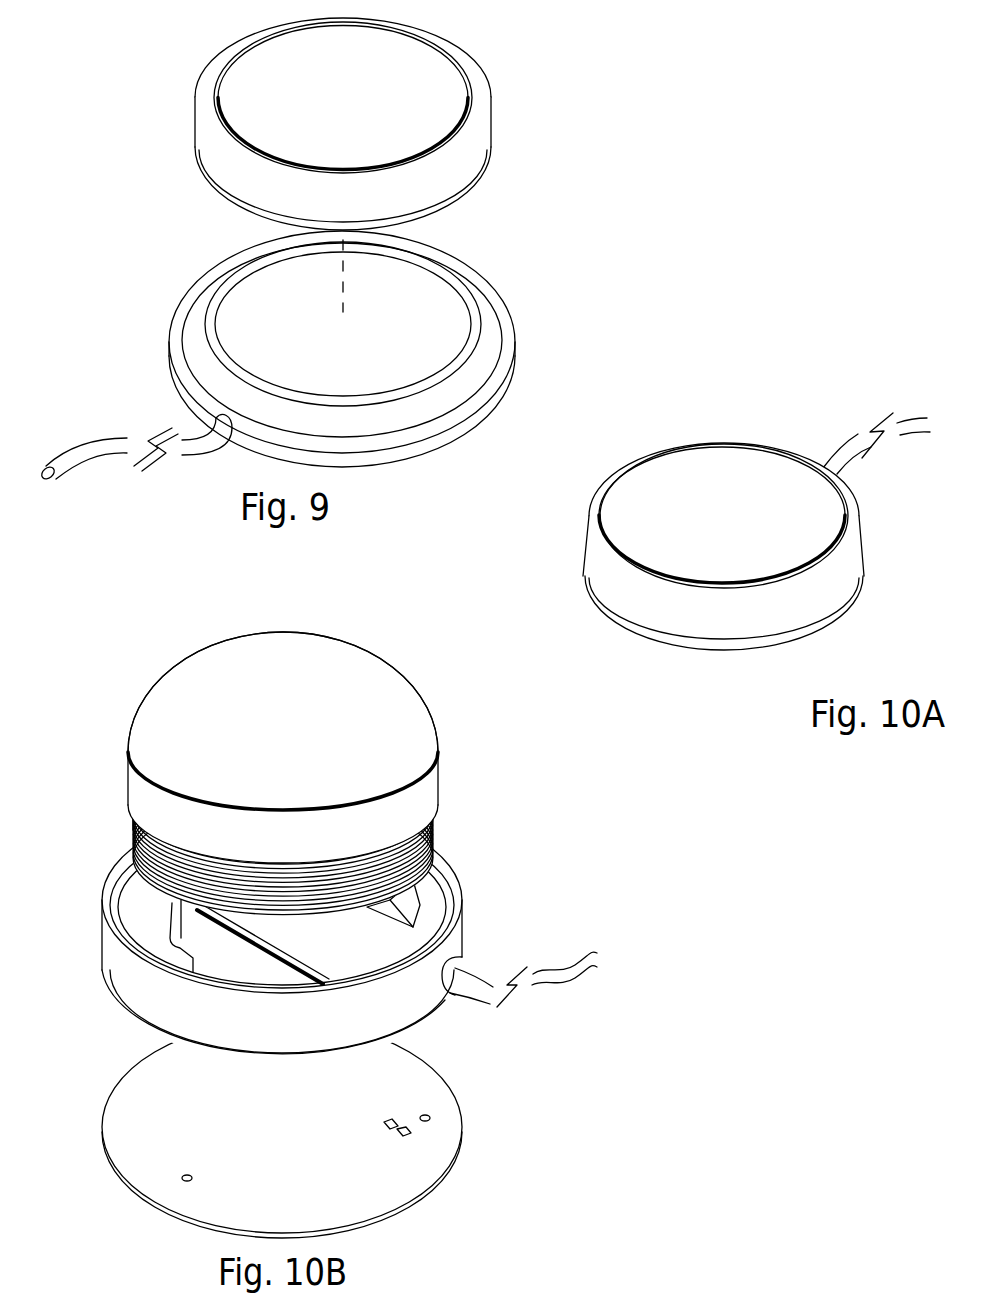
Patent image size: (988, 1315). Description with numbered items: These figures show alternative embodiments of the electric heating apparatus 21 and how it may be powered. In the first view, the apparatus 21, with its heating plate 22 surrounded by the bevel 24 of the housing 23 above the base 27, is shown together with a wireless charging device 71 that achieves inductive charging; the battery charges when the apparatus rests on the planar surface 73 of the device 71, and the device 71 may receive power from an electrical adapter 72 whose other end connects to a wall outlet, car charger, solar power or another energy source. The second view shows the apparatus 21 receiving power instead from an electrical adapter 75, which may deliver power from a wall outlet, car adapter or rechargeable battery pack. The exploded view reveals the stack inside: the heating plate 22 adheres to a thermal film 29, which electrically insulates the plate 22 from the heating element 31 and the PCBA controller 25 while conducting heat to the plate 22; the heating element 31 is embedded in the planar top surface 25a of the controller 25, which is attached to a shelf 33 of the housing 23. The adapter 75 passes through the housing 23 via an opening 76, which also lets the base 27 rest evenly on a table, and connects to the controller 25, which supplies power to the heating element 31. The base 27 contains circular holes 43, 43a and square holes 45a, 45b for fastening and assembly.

In FIG. 9, the electric heating apparatus 21 is at (340, 130).
In FIG. 10A, the electric heating apparatus 21 is at (718, 558).
In FIG. 9, the heating plate 22 is at (273, 102).
In FIG. 10A, the heating plate 22 is at (727, 472).
In FIG. 10B, the heating plate 22 is at (397, 680).
In FIG. 9, the housing 23 is at (452, 167).
In FIG. 10A, the housing 23 is at (798, 595).
In FIG. 10B, the housing 23 is at (328, 933).
In FIG. 9, the bevel 24 is at (473, 110).
In FIG. 10A, the bevel 24 is at (837, 545).
In FIG. 10B, the bevel 24 is at (127, 878).
In FIG. 10B, the PCBA controller 25 is at (291, 832).
In FIG. 10B, the top surface of PCBA controller 25a is at (137, 828).
In FIG. 9, the base 27 is at (237, 203).
In FIG. 10A, the base 27 is at (727, 643).
In FIG. 10B, the base 27 is at (135, 1125).
In FIG. 10B, the thermal film 29 is at (413, 788).
In FIG. 10B, the heating element 31 is at (427, 847).
In FIG. 10B, the shelf 33 is at (358, 940).
In FIG. 10B, the circular hole 43 is at (183, 1180).
In FIG. 10B, the circular hole 43a is at (430, 1118).
In FIG. 10B, the square hole 45a is at (393, 1122).
In FIG. 10B, the square hole 45b is at (408, 1132).
In FIG. 9, the wireless charging device 71 is at (182, 342).
In FIG. 9, the electrical adapter 72 is at (120, 442).
In FIG. 9, the planar surface 73 is at (413, 335).
In FIG. 10A, the electrical adapter 75 is at (840, 450).
In FIG. 10B, the electrical adapter 75 is at (130, 883).
In FIG. 10B, the opening 76 is at (462, 960).